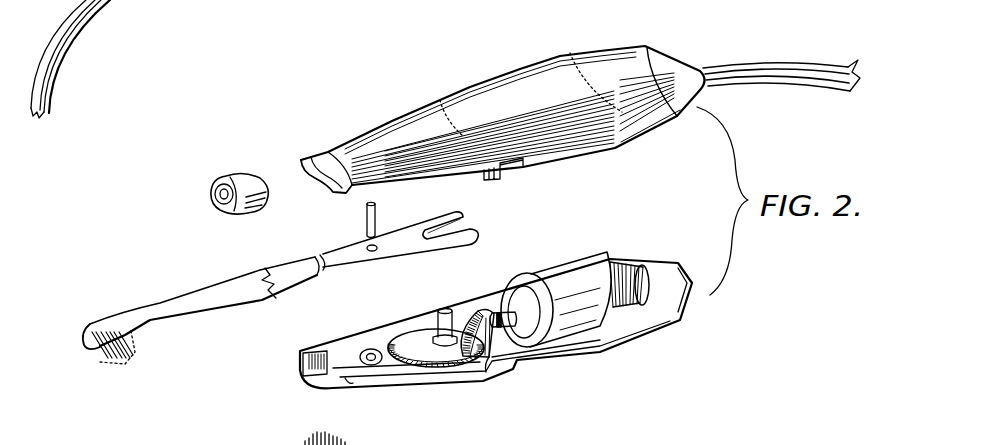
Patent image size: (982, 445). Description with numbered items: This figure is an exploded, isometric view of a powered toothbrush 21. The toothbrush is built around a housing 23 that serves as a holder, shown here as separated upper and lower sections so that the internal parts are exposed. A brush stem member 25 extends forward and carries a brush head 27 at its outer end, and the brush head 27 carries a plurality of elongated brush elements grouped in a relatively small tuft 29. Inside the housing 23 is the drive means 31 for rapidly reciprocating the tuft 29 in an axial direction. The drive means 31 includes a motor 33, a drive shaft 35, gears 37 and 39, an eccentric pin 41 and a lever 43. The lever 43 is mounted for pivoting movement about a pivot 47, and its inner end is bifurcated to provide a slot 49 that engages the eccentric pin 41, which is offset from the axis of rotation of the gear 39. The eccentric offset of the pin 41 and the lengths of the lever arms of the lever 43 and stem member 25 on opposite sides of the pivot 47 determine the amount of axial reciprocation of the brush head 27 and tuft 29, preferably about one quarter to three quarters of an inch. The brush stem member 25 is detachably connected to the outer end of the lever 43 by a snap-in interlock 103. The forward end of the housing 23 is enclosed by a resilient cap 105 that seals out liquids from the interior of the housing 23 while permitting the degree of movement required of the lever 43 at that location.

The powered toothbrush 21 is at (447, 67).
The housing 23 is at (570, 52).
The brush stem member 25 is at (177, 302).
The brush head 27 is at (83, 341).
The tuft 29 is at (100, 360).
The drive means 31 is at (482, 214).
The motor 33 is at (543, 277).
The drive shaft 35 is at (498, 312).
The gear 37 is at (486, 372).
The gear 39 is at (403, 338).
The eccentric pin 41 is at (440, 318).
The lever 43 is at (413, 256).
The pivot 47 is at (365, 222).
The slot 49 is at (472, 218).
The snap-in interlock 103 is at (267, 268).
The resilient cap 105 is at (225, 172).